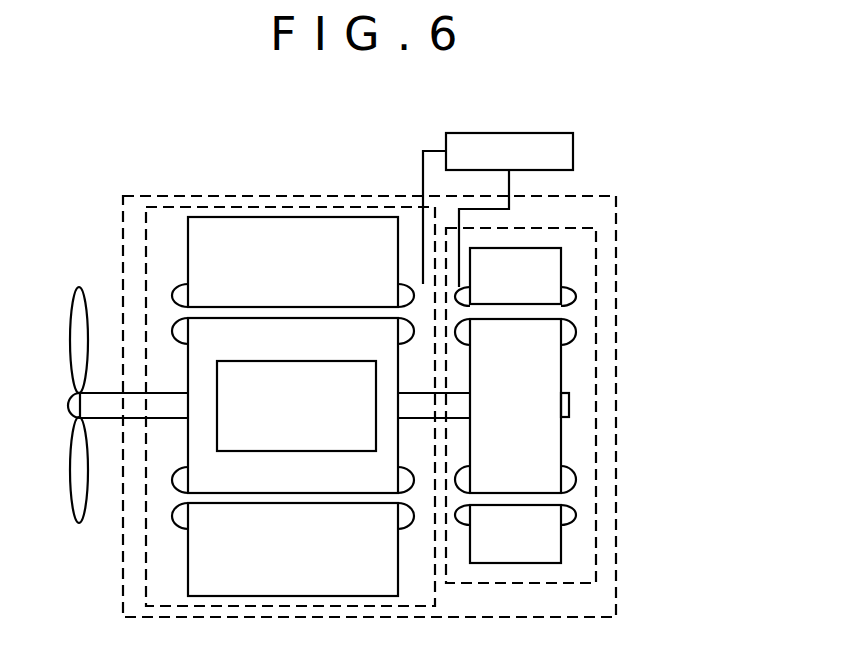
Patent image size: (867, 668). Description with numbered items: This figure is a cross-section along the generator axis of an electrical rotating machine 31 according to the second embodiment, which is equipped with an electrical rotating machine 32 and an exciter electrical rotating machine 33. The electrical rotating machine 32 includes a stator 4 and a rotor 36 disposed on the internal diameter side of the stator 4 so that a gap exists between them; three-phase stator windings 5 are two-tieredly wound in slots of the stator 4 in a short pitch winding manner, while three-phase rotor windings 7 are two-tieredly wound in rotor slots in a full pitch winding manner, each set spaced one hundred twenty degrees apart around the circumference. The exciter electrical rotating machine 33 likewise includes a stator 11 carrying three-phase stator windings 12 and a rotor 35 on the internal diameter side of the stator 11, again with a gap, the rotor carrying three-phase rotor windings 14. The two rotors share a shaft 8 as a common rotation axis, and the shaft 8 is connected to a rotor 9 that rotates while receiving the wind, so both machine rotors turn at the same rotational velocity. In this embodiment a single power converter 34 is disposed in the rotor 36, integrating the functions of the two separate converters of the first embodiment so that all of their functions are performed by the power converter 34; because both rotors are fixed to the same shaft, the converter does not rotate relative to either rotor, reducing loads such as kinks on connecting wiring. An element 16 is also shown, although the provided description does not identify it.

The stator 4 is at (188, 235).
The three-phase stator windings 5 is at (150, 520).
The three-phase rotor windings 7 is at (148, 483).
The shaft 8 is at (105, 393).
The rotor 9 is at (79, 287).
The stator 11 is at (561, 270).
The three-phase stator windings 12 is at (575, 512).
The three-phase rotor windings 14 is at (575, 478).
The controller 16 is at (573, 150).
The electrical rotating machine 31 is at (616, 204).
The electrical rotating machine 32 is at (212, 207).
The exciter electrical rotating machine 33 is at (596, 236).
The power converter 34 is at (300, 427).
The rotor 35 is at (561, 362).
The rotor 36 is at (343, 318).